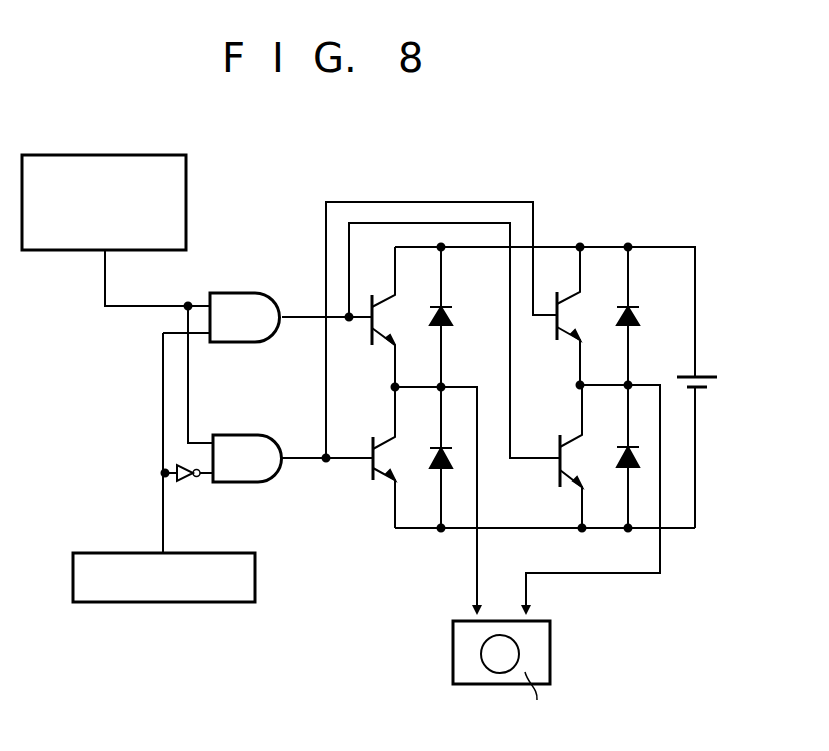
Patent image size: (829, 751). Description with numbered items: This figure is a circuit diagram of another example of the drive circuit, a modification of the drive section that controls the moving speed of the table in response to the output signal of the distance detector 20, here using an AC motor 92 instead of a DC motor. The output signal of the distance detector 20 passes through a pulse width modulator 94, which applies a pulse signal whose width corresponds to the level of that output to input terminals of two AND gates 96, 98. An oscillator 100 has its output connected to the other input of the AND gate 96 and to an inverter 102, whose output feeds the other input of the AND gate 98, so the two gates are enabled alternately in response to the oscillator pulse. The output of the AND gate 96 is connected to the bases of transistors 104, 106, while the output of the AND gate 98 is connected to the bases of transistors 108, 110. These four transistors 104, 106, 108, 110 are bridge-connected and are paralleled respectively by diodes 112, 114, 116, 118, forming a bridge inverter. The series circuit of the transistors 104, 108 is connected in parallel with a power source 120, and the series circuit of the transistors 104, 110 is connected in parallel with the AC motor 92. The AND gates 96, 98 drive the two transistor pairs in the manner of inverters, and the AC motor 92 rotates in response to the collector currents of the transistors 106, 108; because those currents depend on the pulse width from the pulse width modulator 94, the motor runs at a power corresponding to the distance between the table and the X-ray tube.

The distance detector 20 is at (104, 145).
The AC motor 92 is at (550, 635).
The pulse width modulator 94 is at (186, 208).
The AND gate 96 is at (252, 300).
The AND gate 98 is at (276, 470).
The oscillator 100 is at (255, 575).
The inverter 102 is at (185, 481).
The transistor 104 is at (372, 347).
The transistor 106 is at (568, 457).
The transistor 108 is at (373, 482).
The transistor 110 is at (565, 321).
The diode 112 is at (452, 330).
The diode 114 is at (640, 472).
The diode 116 is at (433, 462).
The diode 118 is at (640, 312).
The power source 120 is at (692, 373).